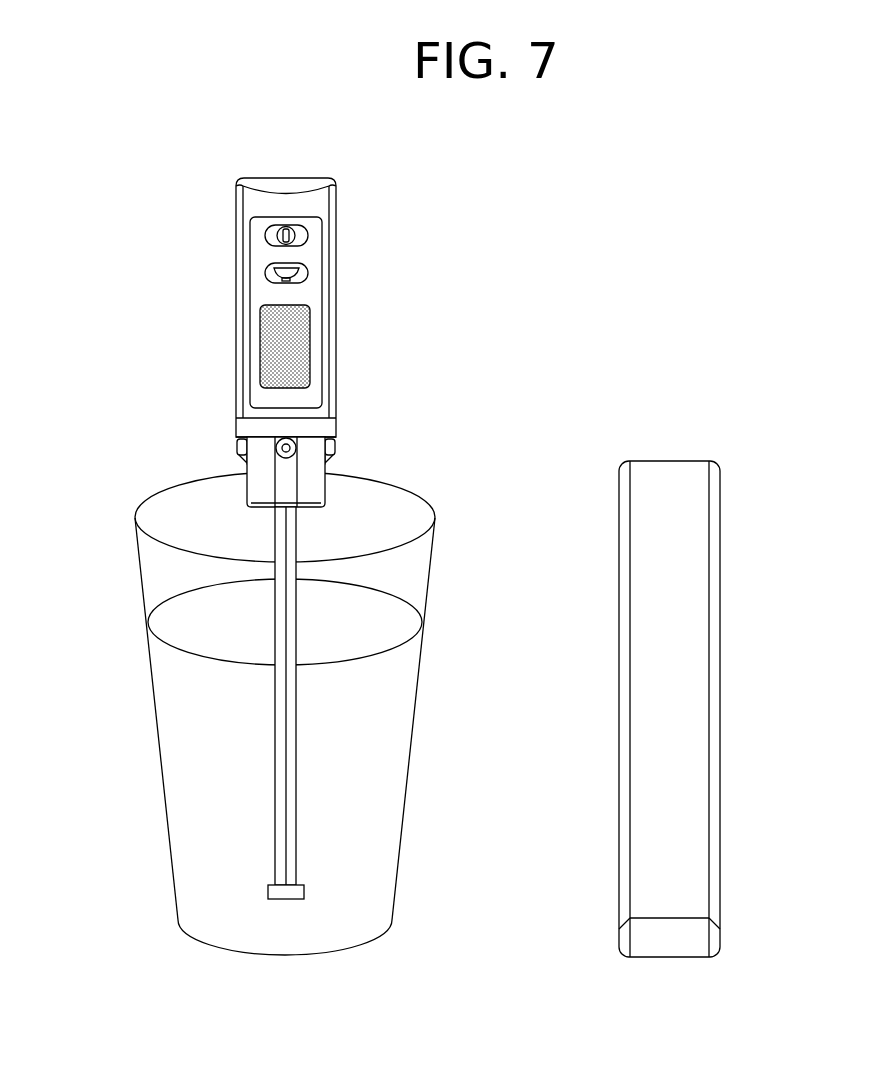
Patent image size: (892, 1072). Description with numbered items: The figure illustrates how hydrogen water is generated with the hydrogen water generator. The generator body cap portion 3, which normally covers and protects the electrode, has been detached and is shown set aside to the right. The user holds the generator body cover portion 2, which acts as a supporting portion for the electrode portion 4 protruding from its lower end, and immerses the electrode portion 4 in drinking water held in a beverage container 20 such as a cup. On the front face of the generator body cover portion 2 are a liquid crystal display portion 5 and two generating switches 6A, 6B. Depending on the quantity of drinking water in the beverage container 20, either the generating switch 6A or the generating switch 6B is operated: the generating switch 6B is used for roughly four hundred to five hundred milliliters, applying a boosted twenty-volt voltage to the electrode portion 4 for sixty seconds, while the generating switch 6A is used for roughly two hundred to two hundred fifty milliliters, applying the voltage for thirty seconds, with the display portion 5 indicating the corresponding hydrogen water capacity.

The generator body cover portion 2 is at (286, 177).
The generator body cap portion 3 is at (721, 556).
The electrode portion 4 is at (297, 792).
The liquid crystal display portion 5 is at (311, 350).
The generating switch 6A is at (310, 272).
The generating switch 6B is at (310, 237).
The beverage container 20 is at (153, 689).